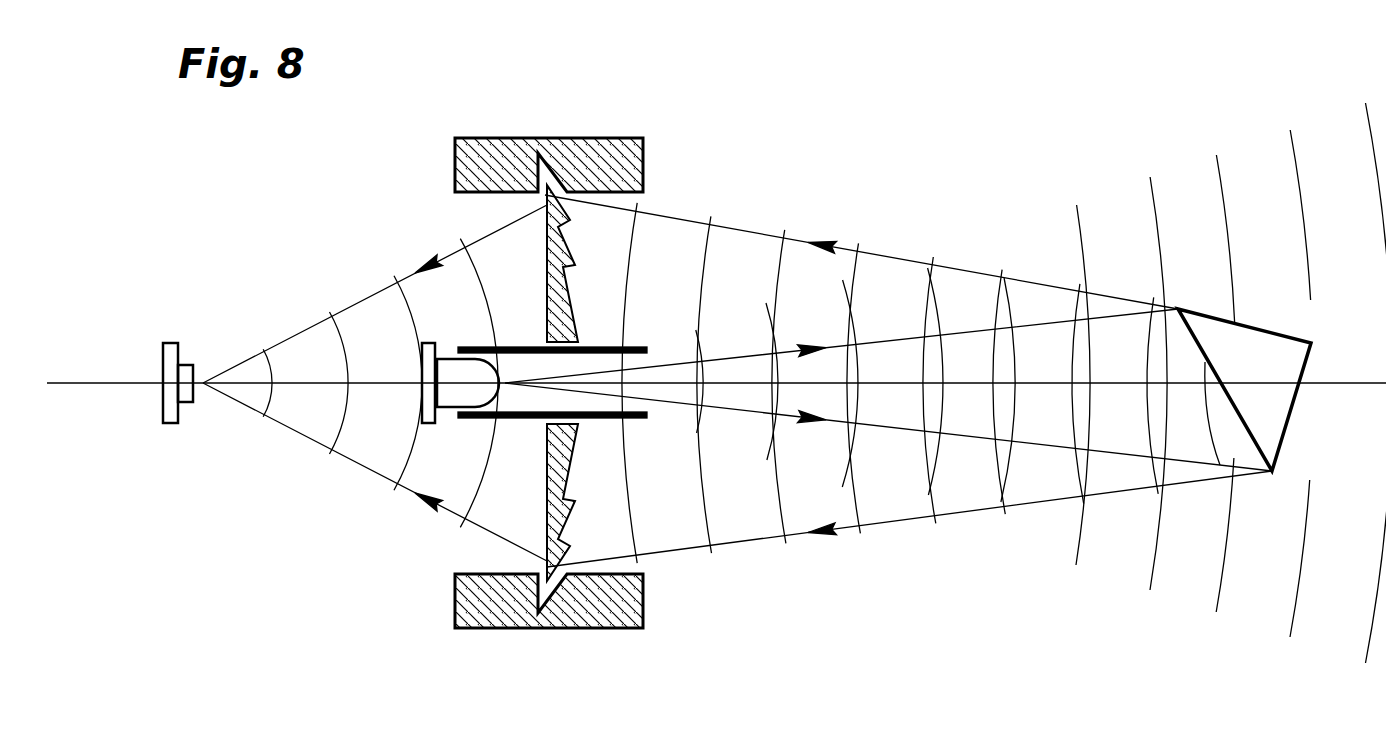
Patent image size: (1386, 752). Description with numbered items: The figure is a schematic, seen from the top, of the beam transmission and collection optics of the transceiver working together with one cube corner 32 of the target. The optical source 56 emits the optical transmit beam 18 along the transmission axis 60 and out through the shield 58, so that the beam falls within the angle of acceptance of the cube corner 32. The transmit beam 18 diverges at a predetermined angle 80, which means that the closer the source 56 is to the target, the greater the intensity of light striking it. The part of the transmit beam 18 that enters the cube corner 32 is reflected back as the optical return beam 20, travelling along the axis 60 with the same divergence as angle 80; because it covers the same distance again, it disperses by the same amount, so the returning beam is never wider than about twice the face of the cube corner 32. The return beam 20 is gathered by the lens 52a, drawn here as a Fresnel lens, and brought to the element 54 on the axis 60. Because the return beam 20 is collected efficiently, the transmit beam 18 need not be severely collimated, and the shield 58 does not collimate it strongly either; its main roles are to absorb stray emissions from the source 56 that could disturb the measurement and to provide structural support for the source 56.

The optical transmit beam 18 is at (1080, 232).
The optical return beam 20 is at (703, 258).
The cube corner 32 is at (1292, 418).
The lens 52a is at (572, 500).
The detector 54 is at (195, 373).
The optical source 56 is at (445, 357).
The shield 58 is at (522, 344).
The transmission axis 60 is at (78, 386).
The predetermined angle 80 is at (728, 360).